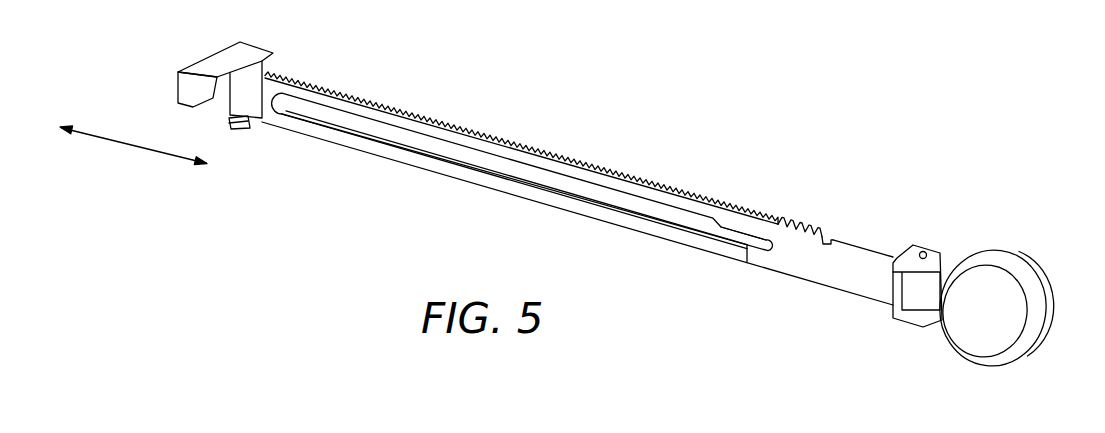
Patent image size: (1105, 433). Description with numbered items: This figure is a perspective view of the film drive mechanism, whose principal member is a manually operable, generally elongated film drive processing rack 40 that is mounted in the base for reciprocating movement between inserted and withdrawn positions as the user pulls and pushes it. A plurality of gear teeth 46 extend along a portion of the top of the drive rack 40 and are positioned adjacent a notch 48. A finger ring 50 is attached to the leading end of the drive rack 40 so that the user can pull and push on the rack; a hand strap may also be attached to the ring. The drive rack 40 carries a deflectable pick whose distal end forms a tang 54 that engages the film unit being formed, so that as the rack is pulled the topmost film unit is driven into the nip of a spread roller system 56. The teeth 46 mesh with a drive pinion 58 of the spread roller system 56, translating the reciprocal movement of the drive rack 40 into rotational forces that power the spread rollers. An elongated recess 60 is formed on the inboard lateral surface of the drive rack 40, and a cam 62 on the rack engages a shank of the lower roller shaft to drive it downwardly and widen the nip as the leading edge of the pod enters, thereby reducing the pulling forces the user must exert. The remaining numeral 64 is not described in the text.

The film drive processing rack 40 is at (561, 192).
The gear teeth 46 is at (628, 177).
The notch 48 is at (830, 238).
The finger ring 50 is at (1023, 277).
The tang 54 is at (217, 54).
The spread roller system 56 is at (189, 87).
The drive pinion 58 is at (238, 130).
The elongated recess 60 is at (467, 151).
The cam 62 is at (746, 245).
The end teeth 64 is at (789, 204).